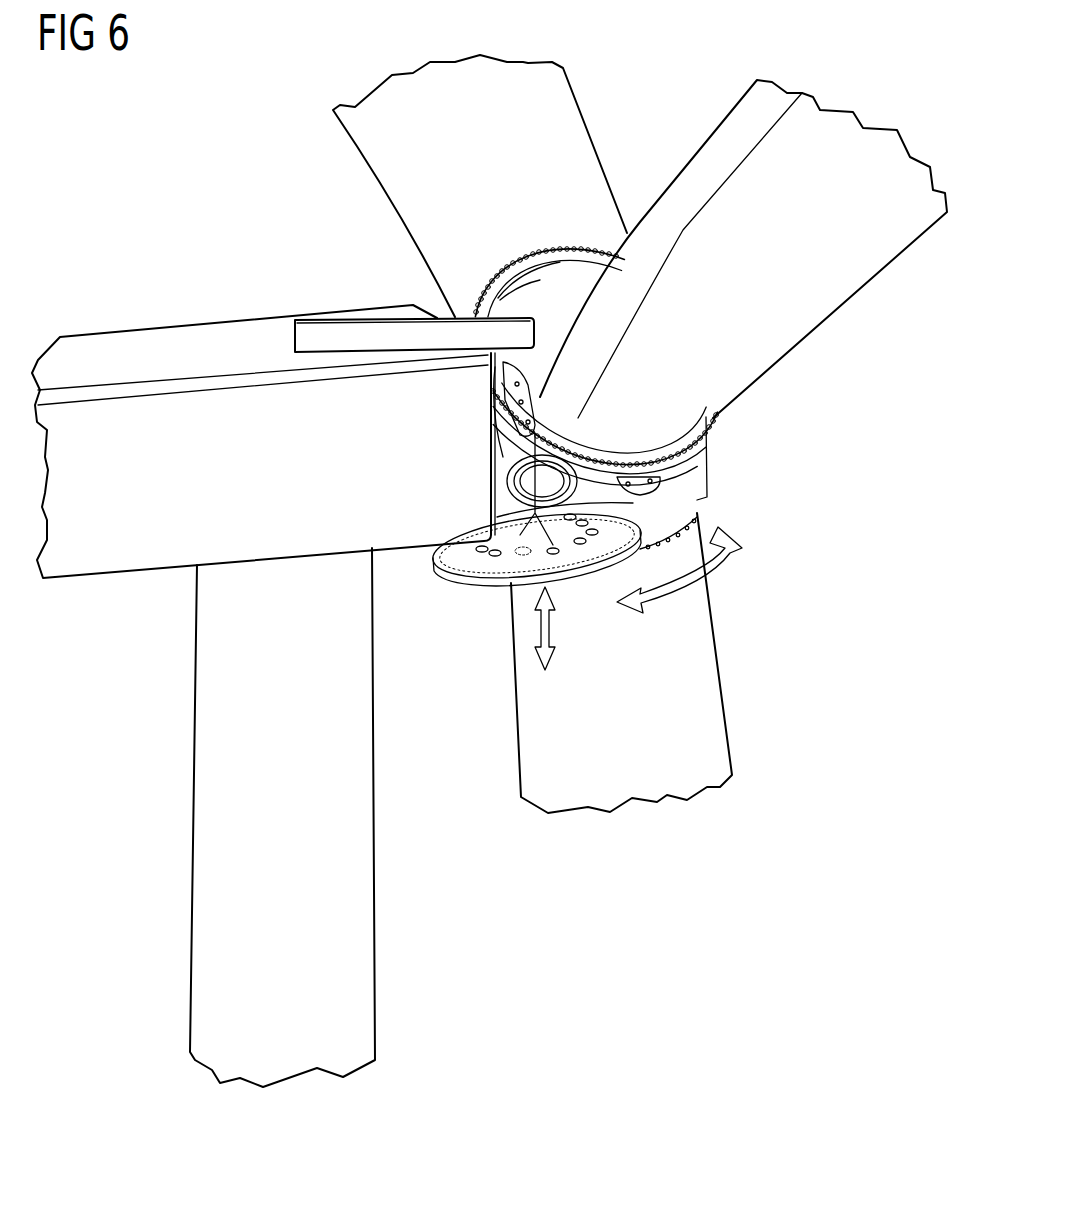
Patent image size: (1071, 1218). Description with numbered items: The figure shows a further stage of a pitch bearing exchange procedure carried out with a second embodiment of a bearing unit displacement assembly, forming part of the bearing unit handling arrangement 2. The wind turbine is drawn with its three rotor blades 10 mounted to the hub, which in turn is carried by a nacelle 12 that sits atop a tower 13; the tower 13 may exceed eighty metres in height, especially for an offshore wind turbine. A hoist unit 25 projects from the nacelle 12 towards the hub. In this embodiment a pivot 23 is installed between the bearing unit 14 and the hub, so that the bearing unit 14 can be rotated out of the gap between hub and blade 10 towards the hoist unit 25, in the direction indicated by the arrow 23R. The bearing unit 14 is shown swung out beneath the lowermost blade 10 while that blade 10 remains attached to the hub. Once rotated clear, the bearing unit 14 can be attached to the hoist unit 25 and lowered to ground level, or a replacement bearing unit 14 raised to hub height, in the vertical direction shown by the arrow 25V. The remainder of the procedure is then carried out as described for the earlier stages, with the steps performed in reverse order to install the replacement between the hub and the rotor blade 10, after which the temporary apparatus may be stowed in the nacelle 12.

The bearing unit handling arrangement 2 is at (777, 490).
The rotor blade 10 is at (575, 130).
The nacelle 12 is at (163, 340).
The tower 13 is at (203, 687).
The bearing unit 14 is at (467, 573).
The pivot 23 is at (576, 515).
The arrow 23R is at (728, 567).
The hoist unit 25 is at (347, 335).
The arrow 25V is at (548, 632).